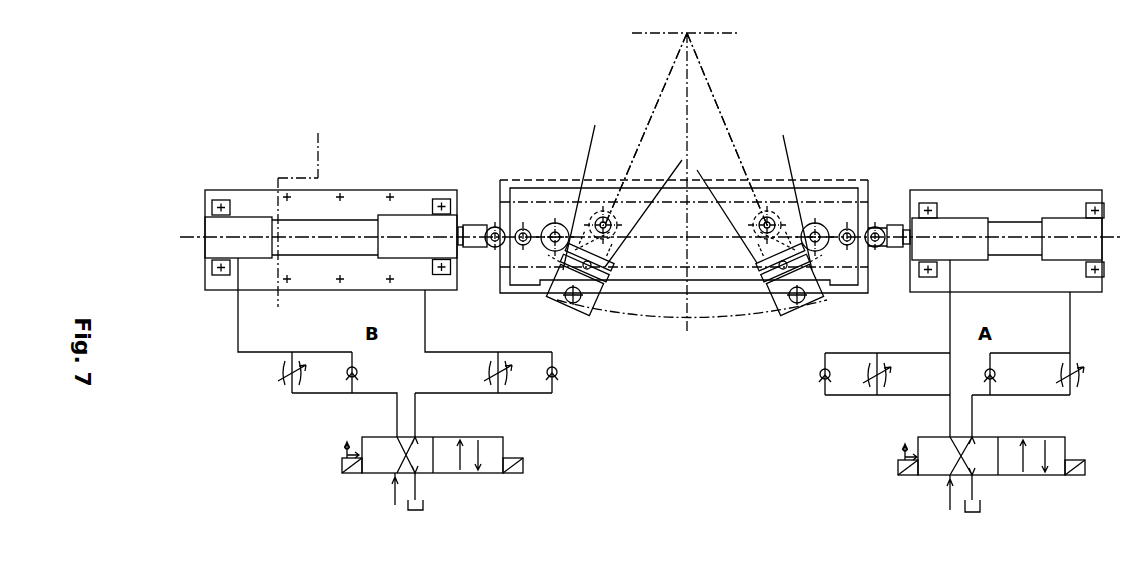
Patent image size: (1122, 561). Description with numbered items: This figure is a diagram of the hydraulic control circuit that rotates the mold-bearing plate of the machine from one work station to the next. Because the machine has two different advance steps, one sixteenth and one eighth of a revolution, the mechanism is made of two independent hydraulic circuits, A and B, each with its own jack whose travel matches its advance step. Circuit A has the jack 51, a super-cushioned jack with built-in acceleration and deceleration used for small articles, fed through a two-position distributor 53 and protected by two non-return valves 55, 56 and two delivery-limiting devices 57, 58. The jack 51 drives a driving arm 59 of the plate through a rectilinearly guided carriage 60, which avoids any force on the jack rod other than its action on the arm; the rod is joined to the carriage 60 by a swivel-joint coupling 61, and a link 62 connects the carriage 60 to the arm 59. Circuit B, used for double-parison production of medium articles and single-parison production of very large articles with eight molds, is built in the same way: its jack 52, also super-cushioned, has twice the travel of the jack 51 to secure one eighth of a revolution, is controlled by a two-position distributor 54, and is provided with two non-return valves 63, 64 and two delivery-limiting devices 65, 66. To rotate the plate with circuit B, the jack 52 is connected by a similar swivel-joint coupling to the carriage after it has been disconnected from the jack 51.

The jack 51 is at (975, 220).
The jack 52 is at (398, 222).
The distributor 53 is at (940, 479).
The distributor 54 is at (375, 477).
The non-return valve 55 is at (813, 375).
The non-return valve 56 is at (978, 375).
The delivery-limiting device 57 is at (892, 375).
The delivery-limiting device 58 is at (1070, 375).
The driving arm 59 is at (712, 120).
The carriage 60 is at (833, 193).
The swivel-joint coupling 61 is at (876, 212).
The link 62 is at (802, 232).
The non-return valve 63 is at (366, 375).
The non-return valve 64 is at (566, 375).
The delivery-limiting device 65 is at (284, 376).
The delivery-limiting device 66 is at (490, 376).